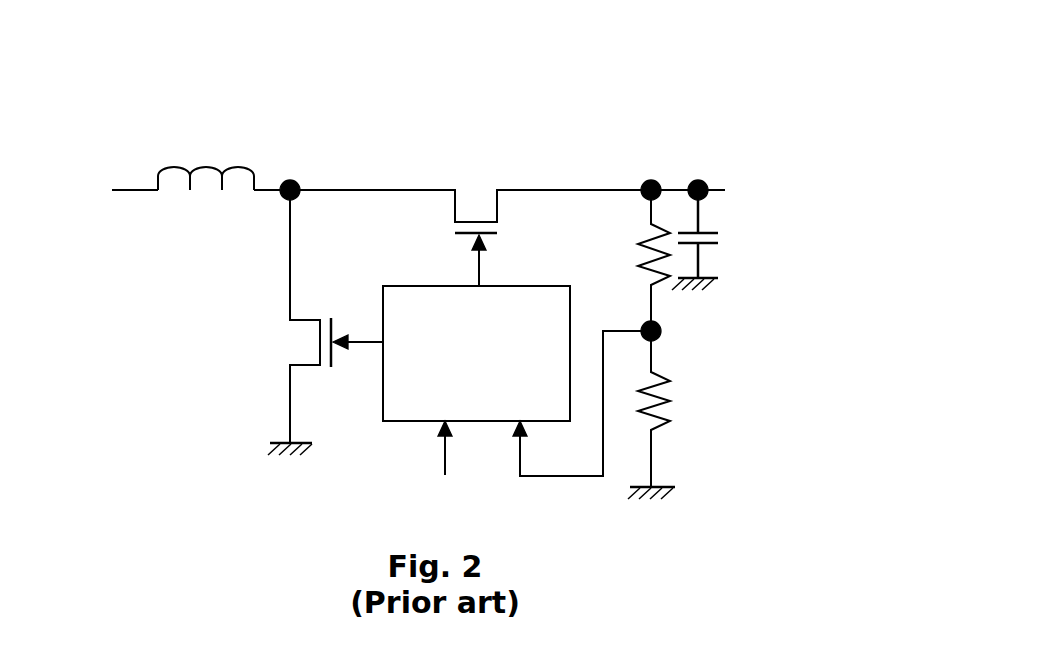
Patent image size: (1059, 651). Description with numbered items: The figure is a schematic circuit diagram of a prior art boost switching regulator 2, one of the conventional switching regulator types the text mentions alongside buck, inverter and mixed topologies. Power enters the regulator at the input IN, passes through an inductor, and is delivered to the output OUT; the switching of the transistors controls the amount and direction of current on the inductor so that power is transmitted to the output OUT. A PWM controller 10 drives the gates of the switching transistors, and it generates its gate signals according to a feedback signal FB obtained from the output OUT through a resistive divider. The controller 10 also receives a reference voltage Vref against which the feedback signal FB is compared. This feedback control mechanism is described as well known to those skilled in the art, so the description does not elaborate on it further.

The boost switching regulator 2 is at (632, 108).
The PWM controller 10 is at (476, 353).
The input terminal IN is at (110, 189).
The output OUT is at (718, 189).
The feedback signal FB is at (613, 396).
The reference voltage input Vref is at (445, 463).